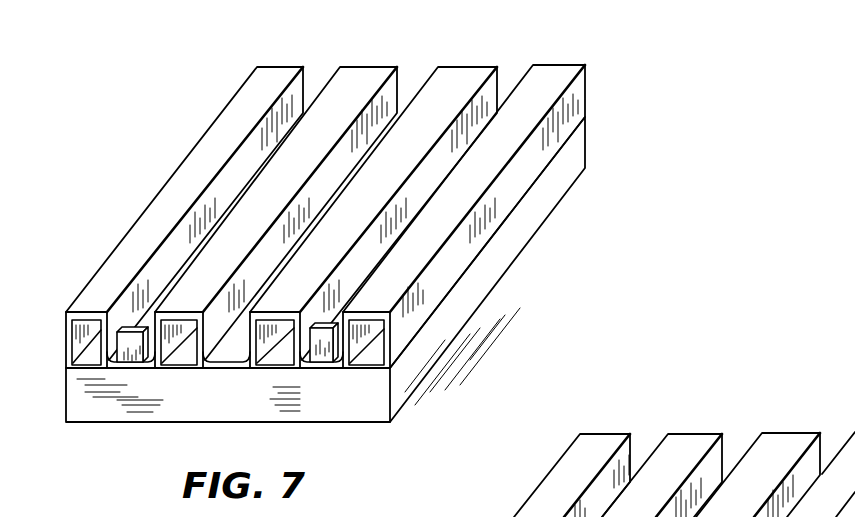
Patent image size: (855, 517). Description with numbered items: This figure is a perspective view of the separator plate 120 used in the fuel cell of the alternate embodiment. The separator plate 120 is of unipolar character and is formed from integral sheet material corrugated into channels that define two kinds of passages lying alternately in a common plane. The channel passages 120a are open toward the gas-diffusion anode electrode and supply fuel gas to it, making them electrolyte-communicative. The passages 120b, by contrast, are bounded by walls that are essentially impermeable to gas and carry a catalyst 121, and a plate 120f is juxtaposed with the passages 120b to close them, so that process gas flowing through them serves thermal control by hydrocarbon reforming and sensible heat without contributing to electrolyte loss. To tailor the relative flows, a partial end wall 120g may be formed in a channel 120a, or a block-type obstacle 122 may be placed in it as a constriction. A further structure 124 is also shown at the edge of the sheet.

The separator plate 120 is at (622, 48).
The channel passage 120a is at (232, 174).
The passage 120b is at (183, 357).
The plate 120f is at (112, 402).
The partial end wall 120g is at (128, 345).
The catalyst 121 is at (363, 328).
The block-type obstacle 122 is at (325, 325).
The second grating structure 124 is at (453, 508).